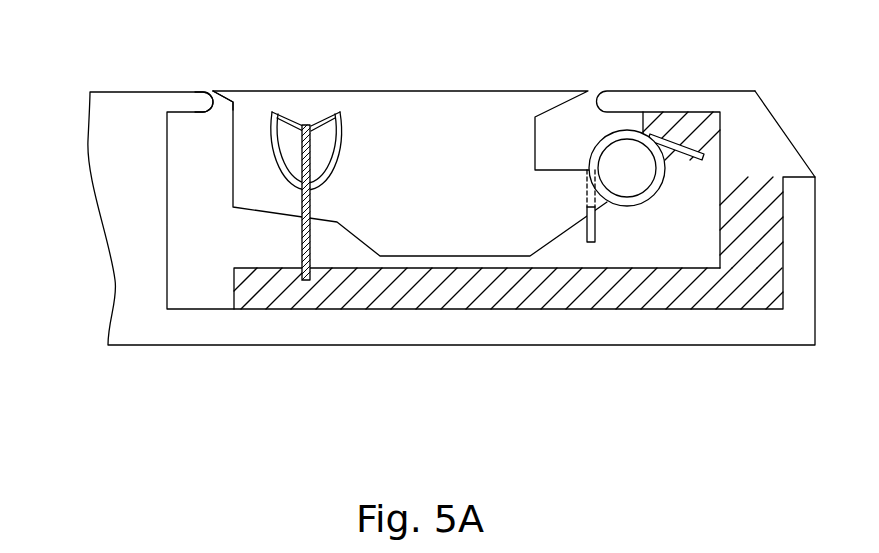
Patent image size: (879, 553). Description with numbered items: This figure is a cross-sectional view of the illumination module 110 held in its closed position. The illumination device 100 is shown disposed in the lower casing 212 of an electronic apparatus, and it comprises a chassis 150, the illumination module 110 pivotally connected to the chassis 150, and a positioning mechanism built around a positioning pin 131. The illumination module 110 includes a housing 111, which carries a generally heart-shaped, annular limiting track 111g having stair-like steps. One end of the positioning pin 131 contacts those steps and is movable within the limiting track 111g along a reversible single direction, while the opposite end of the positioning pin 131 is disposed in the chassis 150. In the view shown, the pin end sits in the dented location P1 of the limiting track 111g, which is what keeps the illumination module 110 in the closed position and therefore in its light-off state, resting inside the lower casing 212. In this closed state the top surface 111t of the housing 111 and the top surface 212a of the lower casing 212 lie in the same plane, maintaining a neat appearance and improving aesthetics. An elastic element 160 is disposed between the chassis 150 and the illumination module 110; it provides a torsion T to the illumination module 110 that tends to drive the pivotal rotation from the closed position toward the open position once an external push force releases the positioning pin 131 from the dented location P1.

The illumination device 100 is at (573, 398).
The illumination module 110 is at (555, 245).
The housing 111 is at (387, 104).
The limiting track 111g is at (342, 162).
The top surface of the housing 111t is at (242, 91).
The positioning pin 131 is at (300, 242).
The chassis 150 is at (415, 295).
The elastic element 160 is at (643, 203).
The lower casing 212 is at (104, 139).
The top surface of the lower casing 212a is at (175, 91).
The dented location P1 is at (315, 123).
The torsion T is at (576, 192).